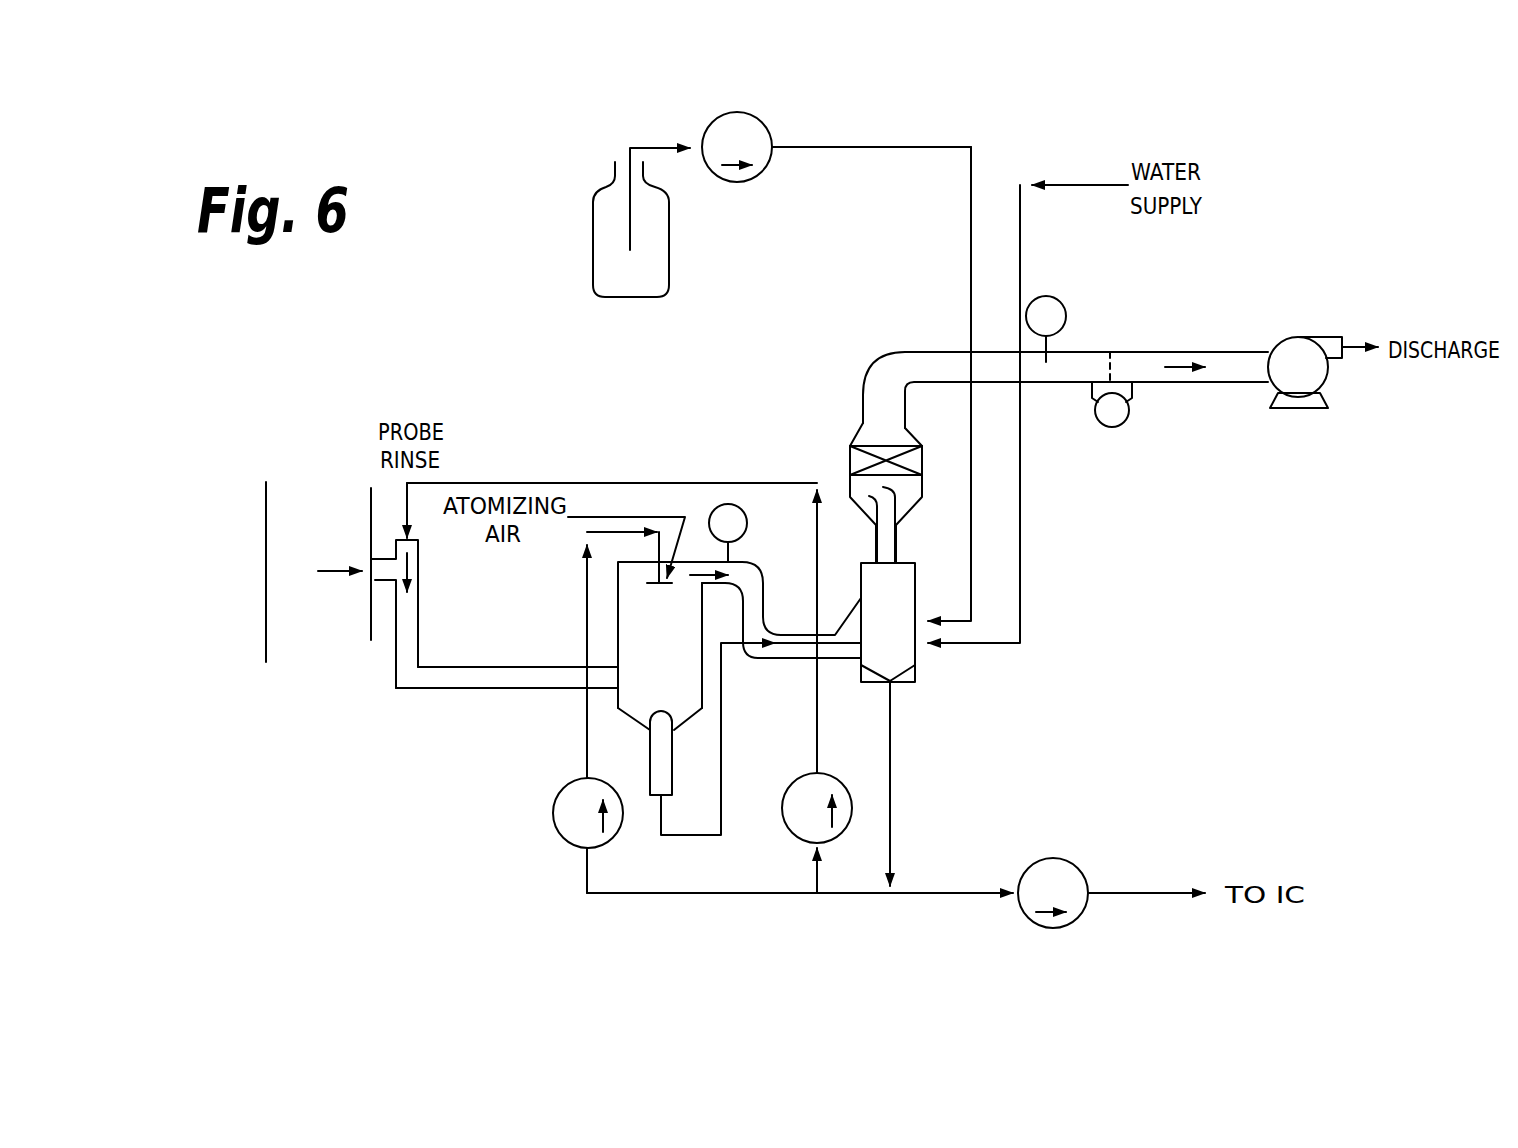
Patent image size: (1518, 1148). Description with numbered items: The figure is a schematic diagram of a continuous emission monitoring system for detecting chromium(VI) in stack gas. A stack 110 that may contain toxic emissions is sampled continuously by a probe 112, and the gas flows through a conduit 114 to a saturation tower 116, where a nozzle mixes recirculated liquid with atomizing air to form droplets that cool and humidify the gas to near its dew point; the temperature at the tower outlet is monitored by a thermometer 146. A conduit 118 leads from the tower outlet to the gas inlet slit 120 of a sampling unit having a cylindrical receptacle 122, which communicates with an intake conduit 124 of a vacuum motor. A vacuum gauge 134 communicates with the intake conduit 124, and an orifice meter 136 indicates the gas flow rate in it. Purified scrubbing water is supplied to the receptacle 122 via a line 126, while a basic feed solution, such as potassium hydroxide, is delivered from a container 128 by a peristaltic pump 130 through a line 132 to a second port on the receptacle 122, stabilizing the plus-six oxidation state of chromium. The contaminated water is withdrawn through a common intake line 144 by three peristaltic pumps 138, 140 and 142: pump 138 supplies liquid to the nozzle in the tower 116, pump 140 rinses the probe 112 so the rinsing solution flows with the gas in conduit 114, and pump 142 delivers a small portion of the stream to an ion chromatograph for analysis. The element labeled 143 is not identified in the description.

The stack 110 is at (263, 538).
The probe 112 is at (384, 583).
The conduit 114 is at (418, 690).
The saturation tower 116 is at (635, 656).
The conduit 118 is at (780, 660).
The gas inlet slit 120 is at (858, 645).
The cylindrical receptacle 122 is at (917, 578).
The intake conduit 124 is at (925, 352).
The line 126 is at (1006, 384).
The container 128 is at (593, 245).
The peristaltic pump 130 is at (770, 130).
The line 132 is at (1005, 414).
The vacuum gauge 134 is at (1058, 300).
The orifice meter 136 is at (1114, 428).
The peristaltic pump 138 is at (553, 813).
The peristaltic pump 140 is at (797, 840).
The peristaltic pump 142 is at (1060, 860).
The filter 143 is at (876, 442).
The common intake line 144 is at (893, 781).
The thermometer 146 is at (747, 523).